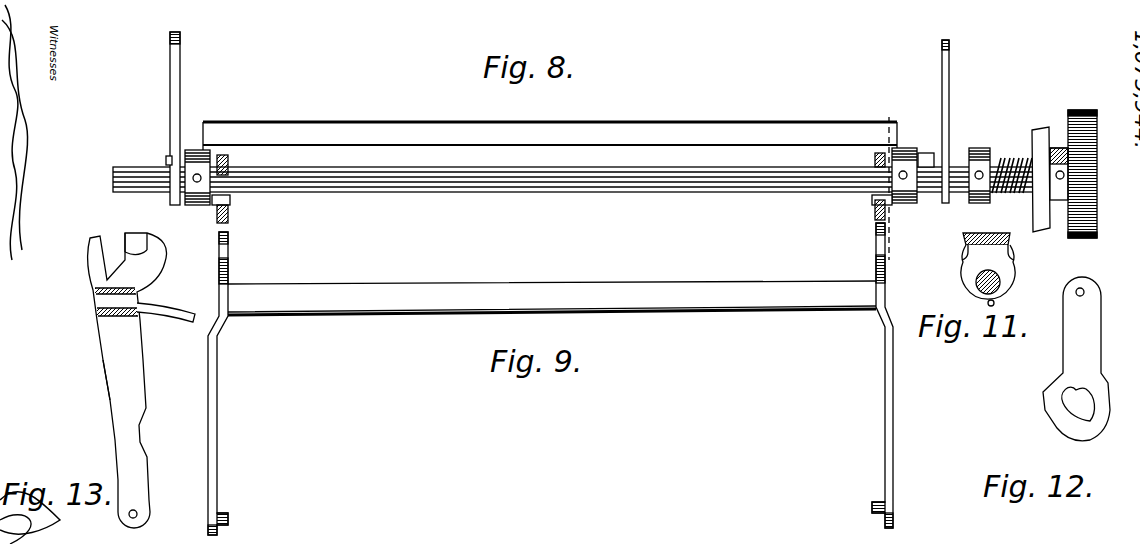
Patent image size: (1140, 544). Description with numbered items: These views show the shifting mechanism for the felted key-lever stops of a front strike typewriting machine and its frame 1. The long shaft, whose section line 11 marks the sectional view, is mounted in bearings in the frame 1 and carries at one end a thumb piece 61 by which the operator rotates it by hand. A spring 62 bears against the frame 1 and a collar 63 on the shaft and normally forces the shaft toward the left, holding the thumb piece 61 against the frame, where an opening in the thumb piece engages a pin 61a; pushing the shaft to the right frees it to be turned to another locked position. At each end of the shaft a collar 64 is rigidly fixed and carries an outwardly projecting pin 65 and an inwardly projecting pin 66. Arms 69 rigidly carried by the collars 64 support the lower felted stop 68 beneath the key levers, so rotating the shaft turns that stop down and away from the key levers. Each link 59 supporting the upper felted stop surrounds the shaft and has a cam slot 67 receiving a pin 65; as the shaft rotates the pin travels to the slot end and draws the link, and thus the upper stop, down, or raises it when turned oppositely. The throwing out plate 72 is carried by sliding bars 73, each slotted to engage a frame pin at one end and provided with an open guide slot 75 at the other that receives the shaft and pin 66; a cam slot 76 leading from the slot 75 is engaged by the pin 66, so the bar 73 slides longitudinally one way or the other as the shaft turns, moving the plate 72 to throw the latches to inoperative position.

In FIG. 8, the frame 1 is at (1040, 128).
In FIG. 8, the section line 11 is at (893, 255).
In FIG. 8, the link 59 is at (180, 100).
In FIG. 12, the link 59 is at (1076, 359).
In FIG. 8, the thumb piece 61 is at (1078, 110).
In FIG. 8, the pin 61a is at (1058, 148).
In FIG. 8, the spring 62 is at (1002, 158).
In FIG. 8, the collar 63 is at (972, 148).
In FIG. 8, the collar 64 is at (192, 206).
In FIG. 11, the collar 64 is at (1012, 286).
In FIG. 8, the outwardly projecting pin 65 is at (166, 160).
In FIG. 8, the inwardly projecting pin 66 is at (230, 200).
In FIG. 11, the inwardly projecting pin 66 is at (995, 306).
In FIG. 12, the cam slot 67 is at (1062, 405).
In FIG. 8, the felted stop 68 is at (415, 125).
In FIG. 11, the felted stop 68 is at (986, 228).
In FIG. 8, the arm 69 is at (229, 160).
In FIG. 9, the throwing out plate 72 is at (378, 316).
In FIG. 13, the throwing out plate 72 is at (180, 312).
In FIG. 8, the sliding bar 73 is at (217, 214).
In FIG. 9, the sliding bar 73 is at (215, 381).
In FIG. 13, the sliding bar 73 is at (130, 381).
In FIG. 13, the guide slot 75 is at (107, 245).
In FIG. 13, the cam slot 76 is at (137, 245).